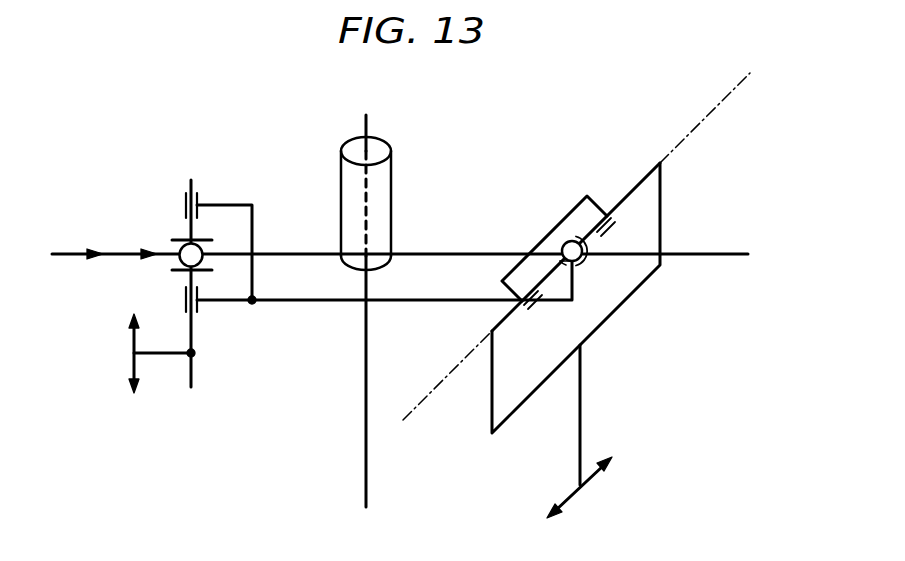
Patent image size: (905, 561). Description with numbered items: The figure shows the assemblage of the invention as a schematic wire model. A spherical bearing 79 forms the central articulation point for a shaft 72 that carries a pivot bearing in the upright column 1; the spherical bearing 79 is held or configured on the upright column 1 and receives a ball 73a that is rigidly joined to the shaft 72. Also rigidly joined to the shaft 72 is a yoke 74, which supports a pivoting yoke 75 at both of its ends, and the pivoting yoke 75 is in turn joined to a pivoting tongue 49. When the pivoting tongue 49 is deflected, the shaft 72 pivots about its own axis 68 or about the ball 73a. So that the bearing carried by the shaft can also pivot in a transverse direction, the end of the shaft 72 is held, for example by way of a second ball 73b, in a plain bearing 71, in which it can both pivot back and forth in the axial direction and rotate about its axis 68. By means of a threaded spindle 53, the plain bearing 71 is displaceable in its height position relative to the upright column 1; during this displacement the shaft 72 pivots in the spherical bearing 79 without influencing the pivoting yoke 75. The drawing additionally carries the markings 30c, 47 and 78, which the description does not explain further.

The upright column 1 is at (363, 457).
The objective lens 30c is at (355, 148).
The reflective surface markings 47 is at (538, 303).
The pivoting tongue 49 is at (581, 420).
The threaded spindle 53 is at (196, 337).
The axis 68 is at (728, 254).
The plain bearing 71 is at (180, 240).
The shaft 72 is at (440, 252).
The ball 73a is at (574, 242).
The ball 73b is at (181, 264).
The yoke 74 is at (536, 247).
The pivoting yoke 75 is at (594, 333).
The tilted axis 78 is at (737, 93).
The spherical bearing 79 is at (590, 247).